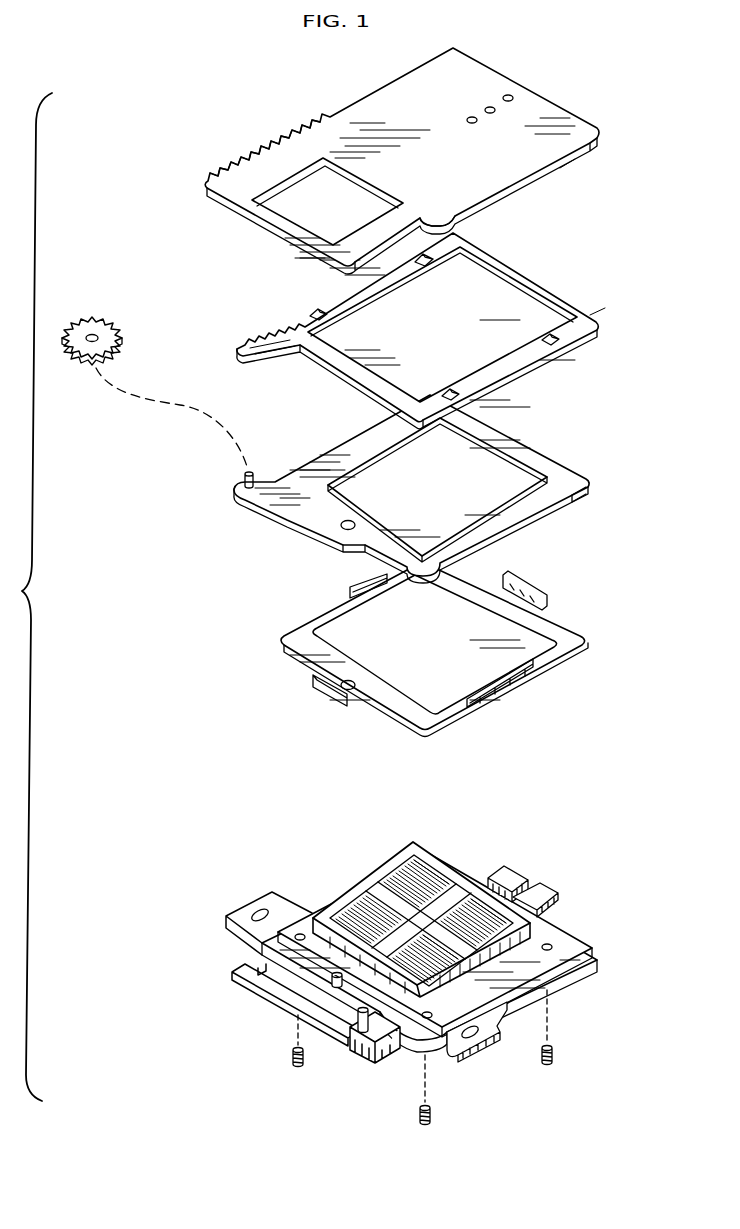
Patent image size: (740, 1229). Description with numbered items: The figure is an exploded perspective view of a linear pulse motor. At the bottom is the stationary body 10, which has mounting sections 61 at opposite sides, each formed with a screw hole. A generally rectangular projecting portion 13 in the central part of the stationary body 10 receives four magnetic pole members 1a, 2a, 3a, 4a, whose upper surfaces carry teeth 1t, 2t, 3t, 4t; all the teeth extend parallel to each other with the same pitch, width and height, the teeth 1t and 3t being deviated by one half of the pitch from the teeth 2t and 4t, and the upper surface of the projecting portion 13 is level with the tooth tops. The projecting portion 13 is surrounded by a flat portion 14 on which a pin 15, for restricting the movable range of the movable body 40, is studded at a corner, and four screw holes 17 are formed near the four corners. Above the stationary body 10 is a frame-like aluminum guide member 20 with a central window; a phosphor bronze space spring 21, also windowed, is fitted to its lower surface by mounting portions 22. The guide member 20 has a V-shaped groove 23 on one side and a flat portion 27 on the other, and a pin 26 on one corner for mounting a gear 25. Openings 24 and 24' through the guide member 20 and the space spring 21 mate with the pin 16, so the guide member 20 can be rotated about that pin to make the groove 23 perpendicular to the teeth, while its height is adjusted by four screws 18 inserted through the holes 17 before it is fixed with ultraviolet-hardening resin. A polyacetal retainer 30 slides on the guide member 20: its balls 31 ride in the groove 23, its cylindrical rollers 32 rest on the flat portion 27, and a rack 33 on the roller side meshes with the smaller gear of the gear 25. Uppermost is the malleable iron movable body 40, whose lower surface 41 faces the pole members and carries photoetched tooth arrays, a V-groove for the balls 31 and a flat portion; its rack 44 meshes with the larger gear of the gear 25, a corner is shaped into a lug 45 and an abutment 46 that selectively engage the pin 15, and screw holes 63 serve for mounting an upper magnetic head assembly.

The stationary body 10 is at (426, 976).
The projecting portion 13 is at (535, 973).
The flat portion 14 is at (520, 955).
The pin 15 is at (358, 1028).
The pin 16 is at (325, 985).
The screw holes 17 is at (300, 932).
The screws 18 is at (292, 1058).
The magnetic pole member 1a is at (362, 900).
The teeth 1t is at (378, 905).
The magnetic pole member 2a is at (410, 875).
The teeth 2t is at (428, 882).
The magnetic pole member 3a is at (462, 975).
The teeth 3t is at (412, 955).
The magnetic pole member 4a is at (515, 935).
The teeth 4t is at (478, 918).
The guide member 20 is at (545, 455).
The space spring 21 is at (565, 633).
The mounting portions 22 is at (348, 582).
The groove 23 is at (578, 478).
The opening 24 is at (310, 536).
The opening 24' is at (378, 671).
The gear 25 is at (122, 340).
The pin 26 is at (253, 470).
The flat portion 27 is at (347, 455).
The retainer 30 is at (596, 321).
The balls 31 is at (448, 388).
The cylindrical rollers 32 is at (432, 264).
The rack 33 is at (262, 320).
The movable body 40 is at (574, 130).
The lower surface 41 is at (520, 206).
The rack 44 is at (273, 147).
The lug 45 is at (330, 259).
The abutment 46 is at (432, 218).
The mounting sections 61 is at (252, 900).
The screw holes 63 is at (486, 107).